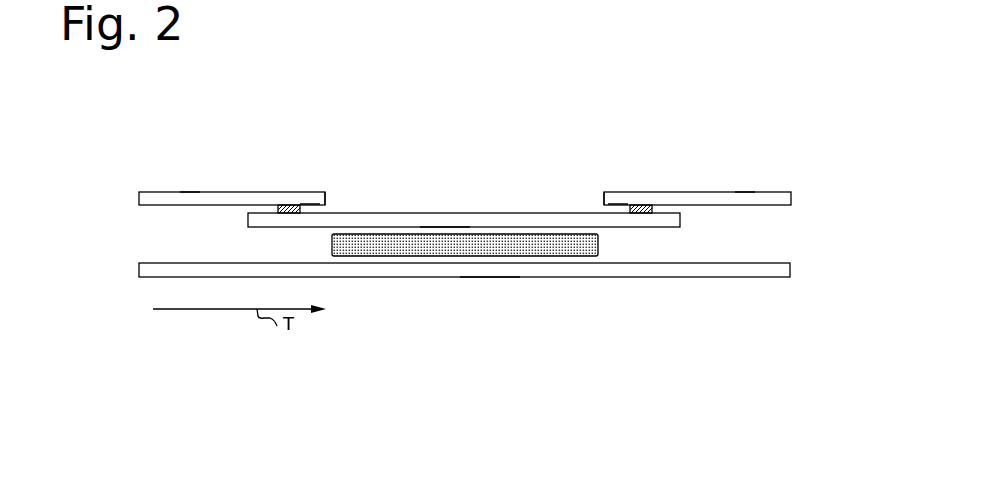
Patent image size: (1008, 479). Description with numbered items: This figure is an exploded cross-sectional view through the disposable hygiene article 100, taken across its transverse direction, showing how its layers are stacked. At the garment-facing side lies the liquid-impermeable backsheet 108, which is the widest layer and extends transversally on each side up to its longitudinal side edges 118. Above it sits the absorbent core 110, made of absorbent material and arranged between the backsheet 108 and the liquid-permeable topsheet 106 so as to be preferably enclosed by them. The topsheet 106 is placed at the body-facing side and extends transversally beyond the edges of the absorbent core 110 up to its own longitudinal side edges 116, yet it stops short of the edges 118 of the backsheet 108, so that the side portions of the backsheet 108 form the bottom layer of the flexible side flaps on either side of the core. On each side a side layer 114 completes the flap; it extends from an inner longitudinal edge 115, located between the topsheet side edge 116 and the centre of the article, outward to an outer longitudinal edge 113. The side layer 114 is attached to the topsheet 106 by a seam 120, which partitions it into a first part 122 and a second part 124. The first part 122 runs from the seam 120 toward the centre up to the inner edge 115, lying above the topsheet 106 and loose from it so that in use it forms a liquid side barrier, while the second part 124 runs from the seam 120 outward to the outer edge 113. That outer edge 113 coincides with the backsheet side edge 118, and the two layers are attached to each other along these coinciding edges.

The disposable hygiene article 100 is at (729, 74).
The liquid-permeable topsheet 106 is at (443, 220).
The liquid-impermeable backsheet 108 is at (487, 278).
The absorbent core 110 is at (492, 242).
The outer longitudinal edge 113 is at (139, 198).
The side layer 114 is at (188, 192).
The inner longitudinal edge 115 is at (327, 198).
The longitudinal side edge 116 is at (248, 217).
The longitudinal side edge 118 is at (139, 268).
The seam 120 is at (288, 203).
The first part 122 is at (310, 198).
The second part 124 is at (253, 198).